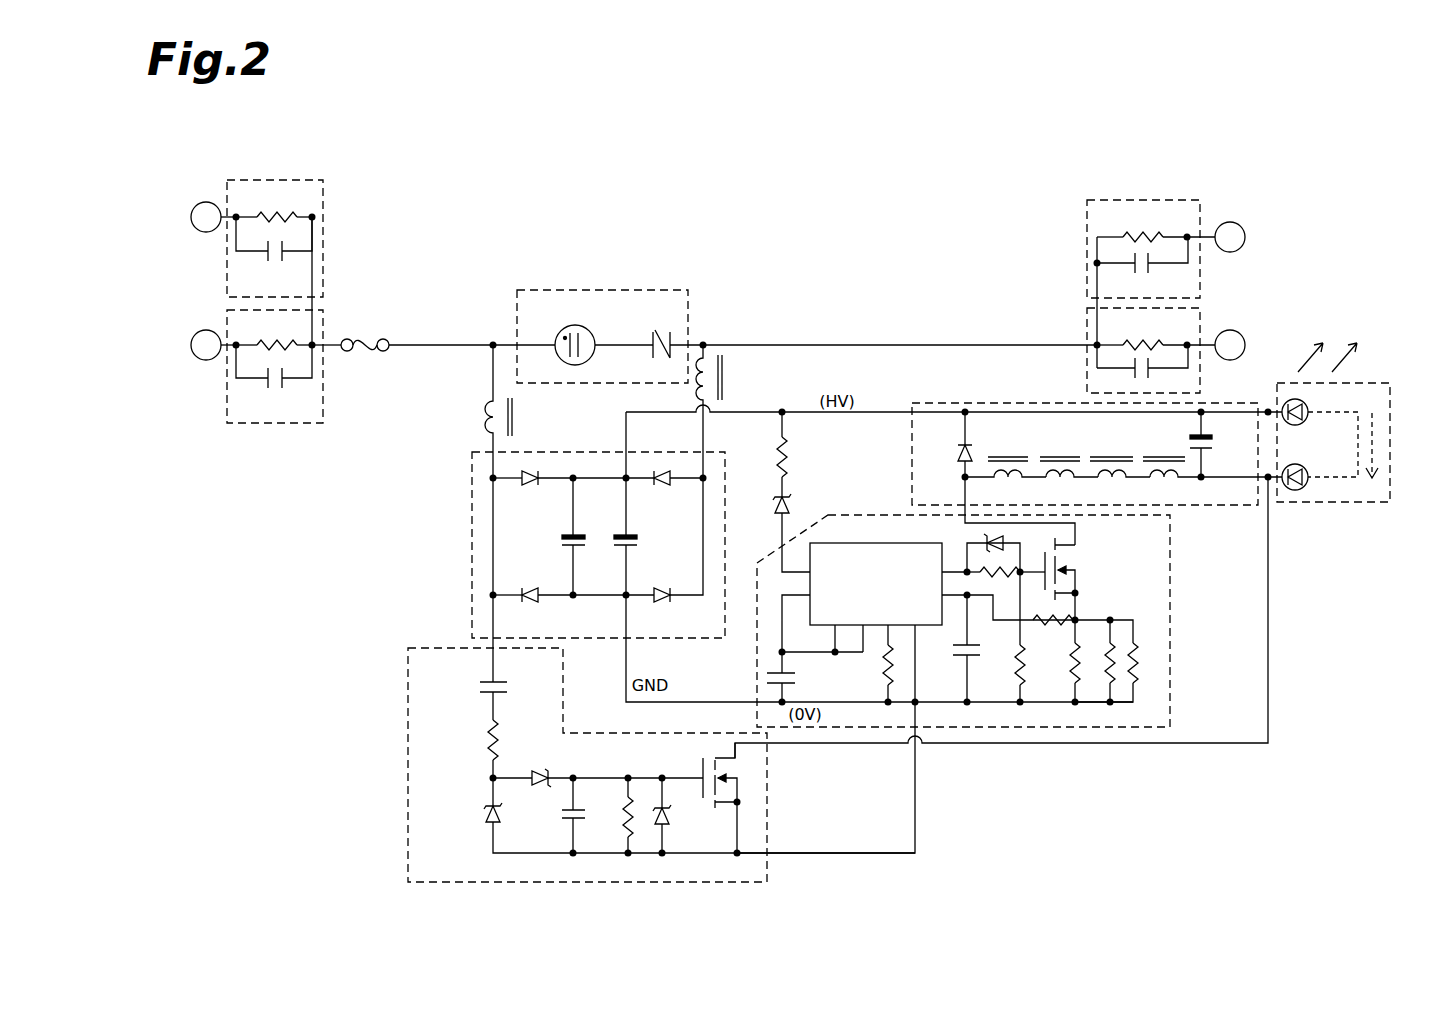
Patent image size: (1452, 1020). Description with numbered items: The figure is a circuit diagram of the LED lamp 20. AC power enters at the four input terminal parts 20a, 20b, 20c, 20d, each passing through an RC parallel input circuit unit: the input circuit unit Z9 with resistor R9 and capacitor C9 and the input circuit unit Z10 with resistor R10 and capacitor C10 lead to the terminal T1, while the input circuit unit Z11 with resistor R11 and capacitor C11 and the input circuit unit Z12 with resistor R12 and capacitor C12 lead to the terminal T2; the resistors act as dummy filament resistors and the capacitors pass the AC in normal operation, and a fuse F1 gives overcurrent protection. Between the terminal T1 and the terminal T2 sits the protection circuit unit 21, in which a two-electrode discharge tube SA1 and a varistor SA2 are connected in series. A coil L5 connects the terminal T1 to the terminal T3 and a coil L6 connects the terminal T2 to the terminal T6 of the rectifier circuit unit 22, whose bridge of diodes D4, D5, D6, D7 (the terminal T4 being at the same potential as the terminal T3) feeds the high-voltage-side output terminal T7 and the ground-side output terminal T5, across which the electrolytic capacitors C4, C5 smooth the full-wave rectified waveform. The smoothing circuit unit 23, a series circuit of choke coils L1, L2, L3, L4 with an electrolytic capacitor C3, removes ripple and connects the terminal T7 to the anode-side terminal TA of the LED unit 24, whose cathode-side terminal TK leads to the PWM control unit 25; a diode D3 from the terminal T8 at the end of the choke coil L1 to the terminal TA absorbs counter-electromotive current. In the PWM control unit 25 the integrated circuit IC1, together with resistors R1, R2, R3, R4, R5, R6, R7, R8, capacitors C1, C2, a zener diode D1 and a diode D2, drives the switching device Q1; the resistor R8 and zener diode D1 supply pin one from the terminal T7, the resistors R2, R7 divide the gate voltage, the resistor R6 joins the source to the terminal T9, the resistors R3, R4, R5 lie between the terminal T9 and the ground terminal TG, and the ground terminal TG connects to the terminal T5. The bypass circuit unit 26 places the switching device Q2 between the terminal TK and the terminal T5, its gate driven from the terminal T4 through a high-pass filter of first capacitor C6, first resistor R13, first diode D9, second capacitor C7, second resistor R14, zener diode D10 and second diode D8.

The LED lamp 20 is at (800, 310).
The input terminal part 20a is at (204, 202).
The input terminal part 20b is at (205, 360).
The input terminal part 20c is at (1240, 225).
The input terminal part 20d is at (1240, 333).
The protection circuit unit 21 is at (600, 290).
The rectifier circuit unit 22 is at (472, 553).
The smoothing circuit unit 23 is at (1198, 510).
The LED unit 24 is at (1313, 500).
The PWM control unit 25 is at (1062, 728).
The bypass circuit unit 26 is at (450, 650).
The input circuit unit Z9 is at (325, 192).
The input circuit unit Z10 is at (260, 423).
The input circuit unit Z11 is at (1185, 200).
The input circuit unit Z12 is at (1087, 380).
The terminal T1 is at (312, 345).
The terminal T2 is at (1097, 345).
The terminal T3 is at (493, 478).
The terminal T4 is at (493, 595).
The ground-side output terminal T5 is at (626, 595).
The terminal T6 is at (703, 478).
The high-voltage-side output terminal T7 is at (626, 478).
The terminal T8 is at (965, 477).
The terminal T9 is at (1075, 620).
The anode-side terminal TA is at (1268, 408).
The cathode-side terminal TK is at (1268, 485).
The GND terminal TG is at (918, 704).
The fuse F1 is at (365, 338).
The two-electrode discharge tube SA1 is at (596, 351).
The varistor SA2 is at (658, 330).
The choke coil L1 is at (1003, 454).
The choke coil L2 is at (1055, 454).
The choke coil L3 is at (1108, 455).
The choke coil L4 is at (1158, 455).
The coil L5 is at (482, 411).
The coil L6 is at (728, 378).
The resistor R1 is at (882, 670).
The resistor R2 is at (1000, 580).
The resistor R3 is at (1066, 667).
The resistor R4 is at (1108, 668).
The resistor R5 is at (1148, 668).
The resistor R6 is at (1052, 624).
The resistor R7 is at (1010, 669).
The resistor R8 is at (790, 447).
The resistor R9 is at (284, 215).
The resistor R10 is at (272, 341).
The resistor R11 is at (1145, 233).
The resistor R12 is at (1145, 341).
The first resistor R13 is at (488, 739).
The second resistor R14 is at (622, 826).
The capacitor C1 is at (796, 667).
The capacitor C2 is at (955, 666).
The electrolytic capacitor C3 is at (1196, 435).
The electrolytic capacitor C4 is at (580, 552).
The electrolytic capacitor C5 is at (632, 552).
The first capacitor C6 is at (480, 678).
The second capacitor C7 is at (562, 822).
The capacitor C9 is at (282, 265).
The capacitor C10 is at (282, 392).
The capacitor C11 is at (1152, 262).
The capacitor C12 is at (1152, 367).
The zener diode D1 is at (774, 494).
The diode D2 is at (985, 544).
The diode D3 is at (952, 443).
The diode D4 is at (538, 490).
The diode D5 is at (652, 490).
The diode D6 is at (525, 605).
The diode D7 is at (672, 605).
The second diode D8 is at (484, 800).
The first diode D9 is at (544, 769).
The zener diode D10 is at (680, 810).
The switching device Q1 is at (1066, 563).
The switching device Q2 is at (700, 763).
The integrated circuit IC1 is at (907, 622).